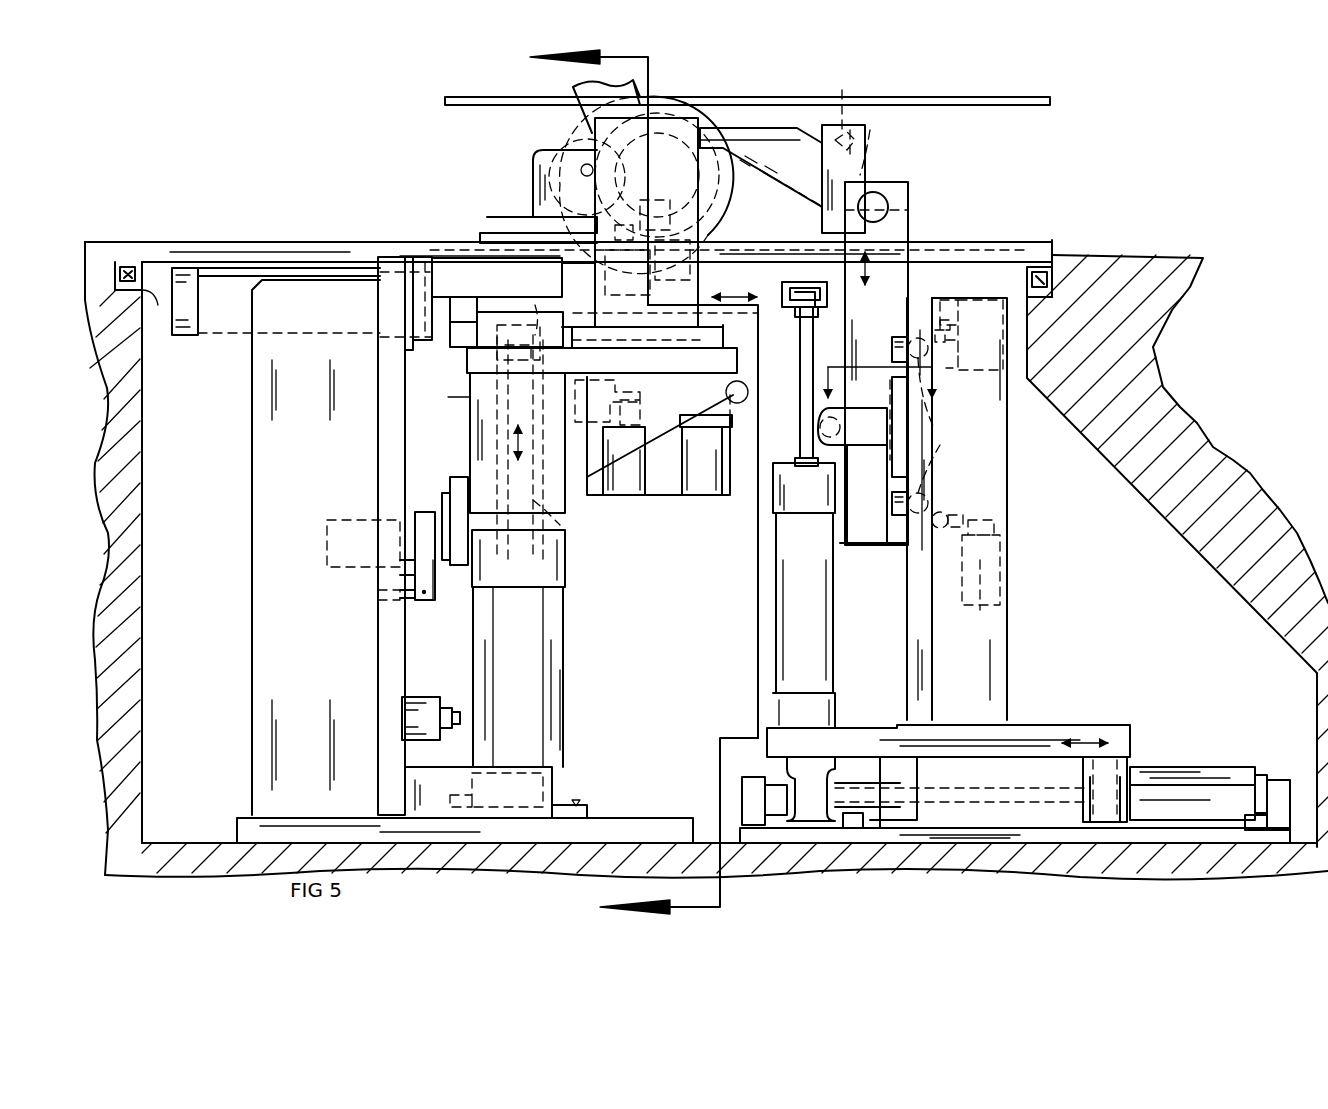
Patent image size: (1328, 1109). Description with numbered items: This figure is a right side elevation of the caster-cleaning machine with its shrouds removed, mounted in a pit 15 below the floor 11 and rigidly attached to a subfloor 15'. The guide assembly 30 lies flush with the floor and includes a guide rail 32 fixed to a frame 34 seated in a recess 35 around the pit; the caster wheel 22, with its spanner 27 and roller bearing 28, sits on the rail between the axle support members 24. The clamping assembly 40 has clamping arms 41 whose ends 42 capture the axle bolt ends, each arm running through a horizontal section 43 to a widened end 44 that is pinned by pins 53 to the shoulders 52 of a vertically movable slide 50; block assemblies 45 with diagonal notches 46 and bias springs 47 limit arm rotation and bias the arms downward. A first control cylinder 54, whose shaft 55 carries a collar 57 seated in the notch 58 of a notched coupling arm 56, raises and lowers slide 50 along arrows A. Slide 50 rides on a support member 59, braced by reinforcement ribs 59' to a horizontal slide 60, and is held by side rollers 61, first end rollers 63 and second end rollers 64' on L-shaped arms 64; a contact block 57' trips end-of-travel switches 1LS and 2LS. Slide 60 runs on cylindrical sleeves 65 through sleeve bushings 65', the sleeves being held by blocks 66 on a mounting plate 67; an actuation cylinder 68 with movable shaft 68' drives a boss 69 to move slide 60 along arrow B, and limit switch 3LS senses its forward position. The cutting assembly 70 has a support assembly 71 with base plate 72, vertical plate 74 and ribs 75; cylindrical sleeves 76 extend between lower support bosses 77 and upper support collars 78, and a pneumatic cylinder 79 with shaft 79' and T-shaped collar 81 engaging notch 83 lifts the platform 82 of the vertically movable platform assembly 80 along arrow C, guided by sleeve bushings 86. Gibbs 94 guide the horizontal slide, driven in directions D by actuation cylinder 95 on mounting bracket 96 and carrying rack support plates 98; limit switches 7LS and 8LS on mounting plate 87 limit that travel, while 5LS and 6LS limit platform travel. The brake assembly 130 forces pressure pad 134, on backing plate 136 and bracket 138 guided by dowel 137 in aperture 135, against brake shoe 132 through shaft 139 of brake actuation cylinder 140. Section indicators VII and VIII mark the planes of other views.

The floor 11 is at (1160, 258).
The pit 15 is at (134, 558).
The subfloor 15' is at (716, 779).
The caster wheel 22 is at (690, 102).
The axle support members 24 is at (585, 112).
The spanner 27 is at (715, 200).
The roller bearing 28 is at (720, 178).
The guide assembly 30 is at (1000, 205).
The guide rail 32 is at (298, 240).
The frame 34 is at (125, 268).
The recess 35 is at (156, 309).
The clamping assembly 40 is at (1022, 484).
The clamping arms 41 is at (775, 125).
The arm ends 42 is at (745, 135).
The horizontal section 43 is at (746, 126).
The widened end 44 is at (810, 203).
The block assembly 45 is at (862, 125).
The notch 46 is at (881, 141).
The bias spring 47 is at (844, 108).
The slide 50 is at (874, 295).
The shoulders 52 is at (882, 200).
The pins 53 is at (880, 195).
The first control cylinder 54 is at (778, 623).
The shaft 55 is at (800, 400).
The notched coupling arm 56 is at (785, 290).
The collar 57 is at (797, 326).
The contact block 57' is at (972, 335).
The notch 58 is at (805, 290).
The support member 59 is at (896, 509).
The reinforcement ribs 59' is at (1002, 509).
The slide 60 is at (1045, 726).
The side rollers 61 is at (892, 347).
The first end rollers 63 is at (932, 428).
The L-shaped arms 64 is at (873, 461).
The second end rollers 64' is at (854, 426).
The cylindrical sleeves 65 is at (1015, 827).
The sleeve bushings 65' is at (955, 770).
The blocks 66 is at (742, 788).
The mounting plate 67 is at (1093, 826).
The actuation cylinder 68 is at (1198, 768).
The movable shaft 68' is at (962, 783).
The boss 69 is at (878, 765).
The cutting assembly 70 is at (412, 212).
The support assembly 71 is at (272, 497).
The base plate 72 is at (625, 820).
The vertical plate 74 is at (378, 665).
The ribs 75 is at (252, 680).
The cylindrical sleeves 76 is at (545, 645).
The lower support bosses 77 is at (548, 785).
The upper support collars 78 is at (562, 284).
The pneumatically operated cylinder 79 is at (581, 709).
The shaft 79' is at (570, 524).
The vertically movable platform assembly 80 is at (470, 424).
The collar 81 is at (507, 322).
The platform 82 is at (758, 357).
The notch 83 is at (540, 320).
The sleeve bushings 86 is at (444, 398).
The mounting plate 87 is at (660, 495).
The gibbs 94 is at (602, 360).
The actuation cylinder 95 is at (213, 335).
The mounting bracket 96 is at (460, 333).
The rack support plates 98 is at (630, 388).
The brake assembly 130 is at (330, 578).
The brake shoe 132 is at (452, 477).
The pressure pad 134 is at (442, 500).
The aperture 135 is at (378, 600).
The backing plate 136 is at (435, 570).
The pivotal dowel 137 is at (408, 605).
The bracket 138 is at (400, 578).
The shaft 139 is at (398, 510).
The brake actuation cylinder 140 is at (327, 540).
The end of travel switch 1LS is at (985, 370).
The end of travel switch 2LS is at (966, 585).
The limit switch 3LS is at (855, 828).
The limit switch 5LS is at (646, 222).
The limit switch 6LS is at (430, 697).
The limit switch 7LS is at (705, 495).
The limit switch 8LS is at (620, 495).
The arrows A is at (876, 267).
The arrow B is at (1085, 735).
The arrow C is at (522, 440).
The arrow D is at (734, 278).
The section line VII is at (896, 395).
The section line VIII is at (624, 482).